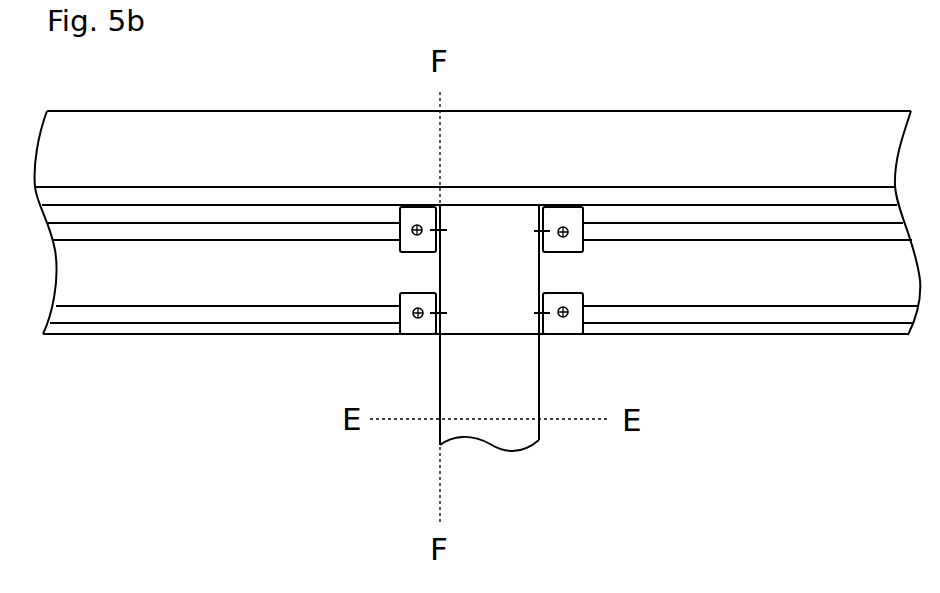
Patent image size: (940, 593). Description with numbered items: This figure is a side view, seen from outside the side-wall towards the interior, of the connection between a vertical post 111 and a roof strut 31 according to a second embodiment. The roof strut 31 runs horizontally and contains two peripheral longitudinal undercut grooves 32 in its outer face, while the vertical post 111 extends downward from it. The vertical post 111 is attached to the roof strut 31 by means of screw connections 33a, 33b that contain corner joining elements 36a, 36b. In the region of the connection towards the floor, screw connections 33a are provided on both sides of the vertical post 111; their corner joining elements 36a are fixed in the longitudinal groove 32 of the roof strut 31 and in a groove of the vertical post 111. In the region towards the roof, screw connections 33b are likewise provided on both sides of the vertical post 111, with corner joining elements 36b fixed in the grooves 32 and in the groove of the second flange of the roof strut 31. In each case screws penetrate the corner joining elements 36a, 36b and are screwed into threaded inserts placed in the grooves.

The roof strut 31 is at (83, 168).
The peripheral longitudinal undercut grooves 32 is at (235, 215).
The screw connections 33a is at (412, 313).
The screw connections 33b is at (421, 226).
The corner joining elements 36a is at (400, 306).
The corner joining elements 36b is at (400, 207).
The vertical post 111 is at (510, 400).